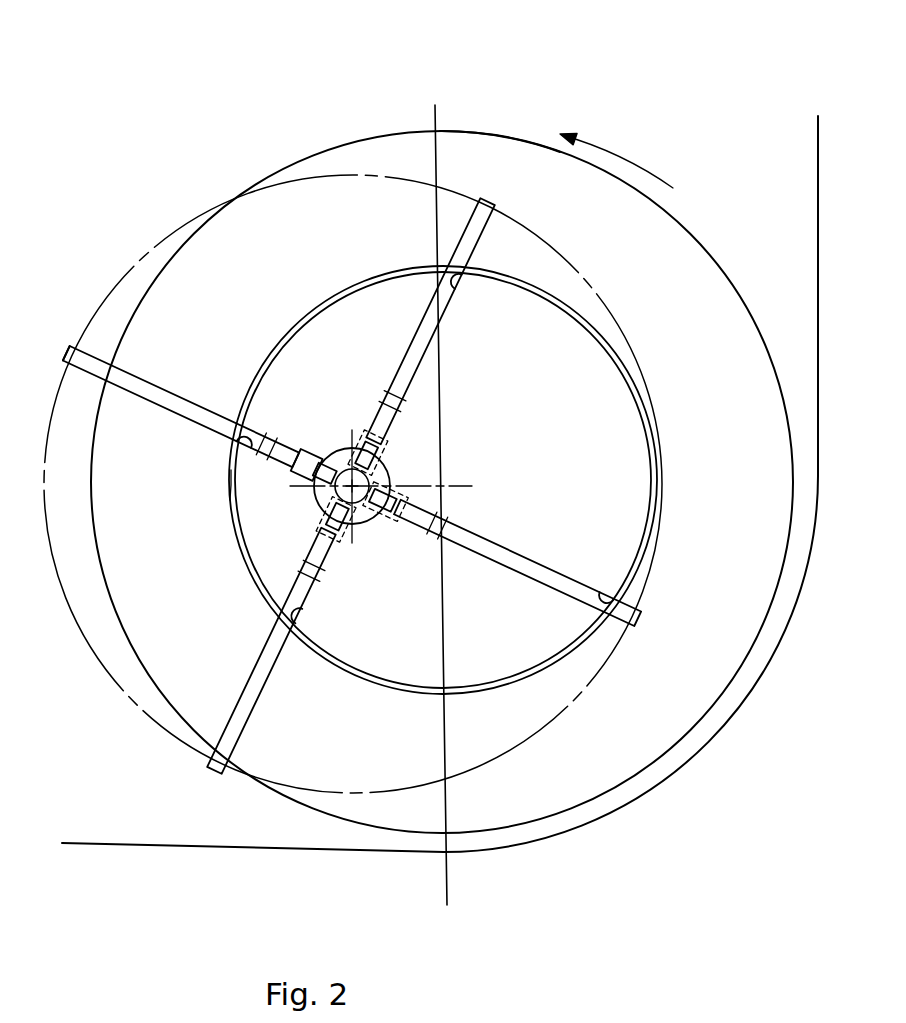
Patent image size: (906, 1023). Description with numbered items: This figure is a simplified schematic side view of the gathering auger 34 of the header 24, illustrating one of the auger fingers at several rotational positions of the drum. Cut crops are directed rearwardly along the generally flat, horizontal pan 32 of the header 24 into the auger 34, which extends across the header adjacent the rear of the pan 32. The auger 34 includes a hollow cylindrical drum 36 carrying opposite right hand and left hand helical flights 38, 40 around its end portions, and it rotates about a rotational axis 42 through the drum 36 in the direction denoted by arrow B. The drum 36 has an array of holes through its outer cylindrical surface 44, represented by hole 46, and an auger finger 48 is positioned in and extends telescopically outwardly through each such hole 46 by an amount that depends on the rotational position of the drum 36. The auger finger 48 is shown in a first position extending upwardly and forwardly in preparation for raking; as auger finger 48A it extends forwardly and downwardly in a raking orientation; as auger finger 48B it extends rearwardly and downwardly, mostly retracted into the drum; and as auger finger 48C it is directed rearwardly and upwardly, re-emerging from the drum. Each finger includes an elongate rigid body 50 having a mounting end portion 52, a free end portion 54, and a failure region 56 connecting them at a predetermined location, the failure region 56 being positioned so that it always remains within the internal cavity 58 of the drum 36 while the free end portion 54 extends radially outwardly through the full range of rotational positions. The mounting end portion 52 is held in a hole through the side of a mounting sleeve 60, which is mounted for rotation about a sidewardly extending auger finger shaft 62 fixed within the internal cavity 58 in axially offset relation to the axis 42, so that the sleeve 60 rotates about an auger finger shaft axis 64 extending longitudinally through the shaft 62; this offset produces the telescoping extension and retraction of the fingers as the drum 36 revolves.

The header 24 is at (421, 433).
The pan 32 is at (90, 842).
The gathering auger 34 is at (728, 270).
The drum 36 is at (490, 480).
The right hand helical flight 38 is at (500, 97).
The left hand helical flight 40 is at (518, 136).
The rotational axis 42 is at (456, 486).
The outer cylindrical surface 44 is at (650, 556).
The hole 46 is at (457, 284).
The auger finger 48 is at (197, 371).
The auger finger 48A is at (222, 734).
The auger finger 48B is at (616, 630).
The auger finger 48C is at (482, 240).
The elongate rigid body 50 is at (178, 382).
The mounting end portion 52 is at (294, 448).
The free end portion 54 is at (130, 397).
The failure region 56 is at (250, 488).
The internal cavity 58 is at (636, 465).
The mounting sleeve 60 is at (365, 522).
The auger finger shaft 62 is at (375, 470).
The auger finger shaft axis 64 is at (352, 486).
The arrow B is at (642, 166).